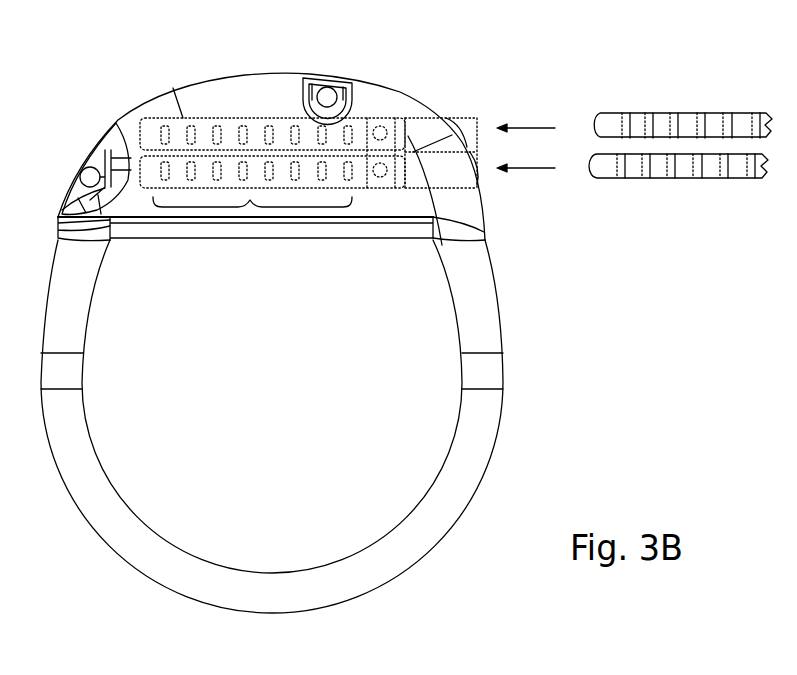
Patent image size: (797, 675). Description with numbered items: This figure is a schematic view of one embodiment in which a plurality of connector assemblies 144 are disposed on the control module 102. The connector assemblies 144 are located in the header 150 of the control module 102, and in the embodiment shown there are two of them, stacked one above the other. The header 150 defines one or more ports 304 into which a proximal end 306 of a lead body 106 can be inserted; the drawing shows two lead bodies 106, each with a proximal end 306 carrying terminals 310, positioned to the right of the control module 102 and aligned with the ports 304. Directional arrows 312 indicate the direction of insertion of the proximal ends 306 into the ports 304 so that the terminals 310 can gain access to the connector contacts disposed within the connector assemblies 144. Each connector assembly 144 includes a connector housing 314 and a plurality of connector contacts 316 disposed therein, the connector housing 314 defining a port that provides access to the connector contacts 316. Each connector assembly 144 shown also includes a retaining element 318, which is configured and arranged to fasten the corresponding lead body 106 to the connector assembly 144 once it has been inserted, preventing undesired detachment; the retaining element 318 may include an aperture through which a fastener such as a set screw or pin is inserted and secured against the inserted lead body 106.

The control module 102 is at (81, 99).
The lead body 106 is at (710, 113).
The connector assembly 144 is at (357, 118).
The header 150 is at (241, 84).
The port 304 is at (475, 107).
The proximal end 306 is at (680, 111).
The terminals 310 is at (615, 184).
The directional arrows 312 is at (532, 128).
The connector housing 314 is at (165, 117).
The connector contacts 316 is at (250, 208).
The retaining element 318 is at (388, 123).